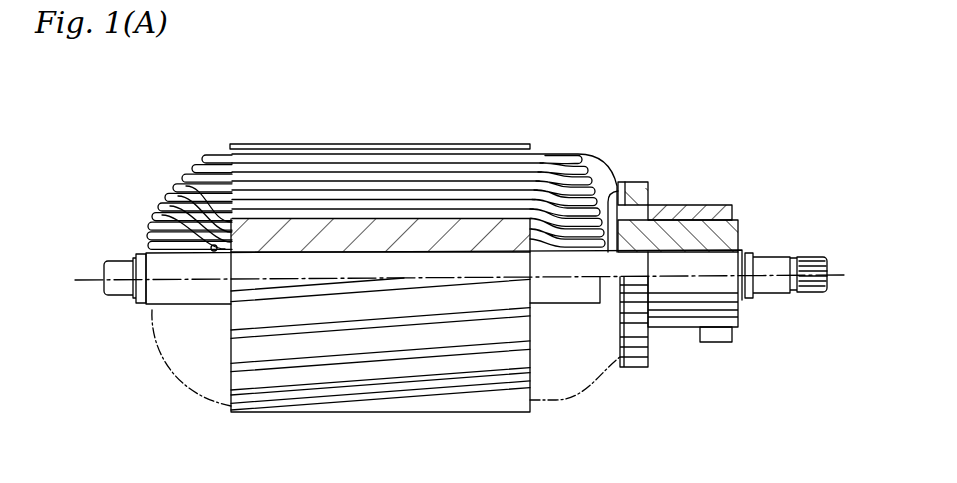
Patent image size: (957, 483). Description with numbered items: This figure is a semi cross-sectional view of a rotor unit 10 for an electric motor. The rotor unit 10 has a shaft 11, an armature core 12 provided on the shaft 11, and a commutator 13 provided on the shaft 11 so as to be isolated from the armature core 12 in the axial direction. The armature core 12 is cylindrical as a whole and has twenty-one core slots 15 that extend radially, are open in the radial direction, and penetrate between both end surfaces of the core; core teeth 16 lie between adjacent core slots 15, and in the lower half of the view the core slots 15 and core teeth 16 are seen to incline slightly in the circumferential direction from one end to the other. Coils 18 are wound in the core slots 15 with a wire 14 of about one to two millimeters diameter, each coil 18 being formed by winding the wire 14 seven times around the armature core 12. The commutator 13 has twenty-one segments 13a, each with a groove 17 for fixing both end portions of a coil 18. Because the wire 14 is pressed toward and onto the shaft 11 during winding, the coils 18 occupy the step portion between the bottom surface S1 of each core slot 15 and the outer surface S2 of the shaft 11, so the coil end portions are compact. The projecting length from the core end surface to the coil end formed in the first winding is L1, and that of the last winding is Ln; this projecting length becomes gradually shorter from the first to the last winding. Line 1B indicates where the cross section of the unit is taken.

The rotor unit 10 is at (527, 119).
The shaft 11 is at (176, 270).
The armature core 12 is at (292, 376).
The commutator 13 is at (683, 322).
The segment 13a is at (711, 207).
The wire 14 is at (581, 153).
The core slot 15 is at (446, 374).
The core tooth 16 is at (505, 353).
The groove 17 is at (643, 183).
The coil 18 is at (433, 144).
The bottom surface of core slot S1 is at (273, 222).
The outer surface of shaft S2 is at (207, 253).
The projecting length of first winding L1 is at (230, 83).
The projecting length of last winding Ln is at (202, 115).
The section line 1B— 1B is at (773, 157).